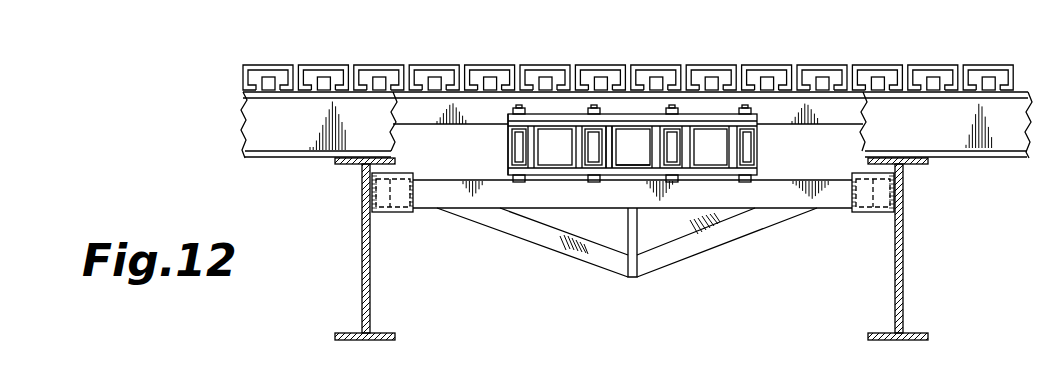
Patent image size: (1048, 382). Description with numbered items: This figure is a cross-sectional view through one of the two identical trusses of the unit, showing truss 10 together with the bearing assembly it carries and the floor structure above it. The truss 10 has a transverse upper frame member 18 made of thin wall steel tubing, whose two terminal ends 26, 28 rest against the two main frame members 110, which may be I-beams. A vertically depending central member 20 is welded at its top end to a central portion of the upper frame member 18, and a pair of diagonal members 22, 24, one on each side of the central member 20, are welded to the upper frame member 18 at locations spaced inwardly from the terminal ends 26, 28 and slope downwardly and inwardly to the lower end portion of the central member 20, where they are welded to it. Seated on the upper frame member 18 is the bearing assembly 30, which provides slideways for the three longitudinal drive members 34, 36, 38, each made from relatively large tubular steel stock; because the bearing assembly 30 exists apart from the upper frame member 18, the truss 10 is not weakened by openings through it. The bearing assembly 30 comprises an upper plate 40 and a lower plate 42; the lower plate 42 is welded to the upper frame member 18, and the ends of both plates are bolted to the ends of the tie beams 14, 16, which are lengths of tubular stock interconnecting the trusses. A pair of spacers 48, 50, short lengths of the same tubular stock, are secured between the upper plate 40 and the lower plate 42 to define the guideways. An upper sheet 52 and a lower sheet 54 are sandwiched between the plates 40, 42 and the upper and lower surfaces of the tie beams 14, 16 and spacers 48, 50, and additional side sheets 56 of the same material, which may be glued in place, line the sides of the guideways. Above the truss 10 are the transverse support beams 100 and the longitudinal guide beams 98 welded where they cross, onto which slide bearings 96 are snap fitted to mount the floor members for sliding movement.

The truss 10 is at (470, 230).
The tie beam 14 is at (760, 140).
The tie beam 16 is at (508, 153).
The upper frame member 18 is at (790, 181).
The central member 20 is at (640, 238).
The diagonal member 22 is at (596, 257).
The diagonal member 24 is at (717, 238).
The terminal end 26 is at (372, 196).
The terminal end 28 is at (903, 195).
The bearing assembly 30 is at (582, 148).
The drive member 34 is at (554, 128).
The drive member 36 is at (640, 127).
The drive member 38 is at (711, 127).
The upper plate 40 is at (548, 128).
The lower plate 42 is at (556, 176).
The spacer 48 is at (586, 166).
The spacer 50 is at (672, 166).
The upper sheet 52 is at (628, 129).
The lower sheet 54 is at (634, 166).
The side sheet 56 is at (534, 146).
The slide bearing 96 is at (325, 65).
The longitudinal guide beam 98 is at (270, 76).
The transverse support beam 100 is at (300, 134).
The main frame member 110 is at (362, 277).